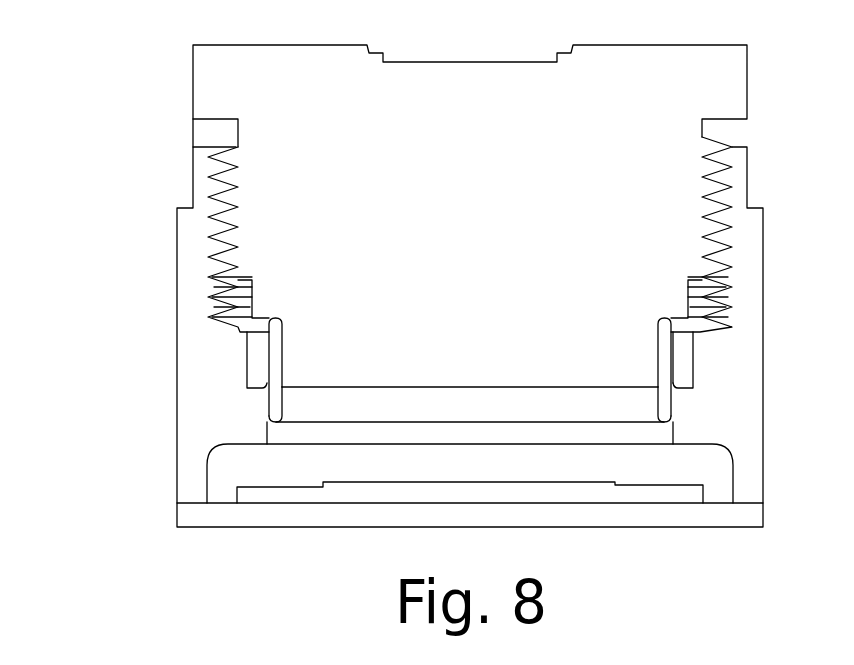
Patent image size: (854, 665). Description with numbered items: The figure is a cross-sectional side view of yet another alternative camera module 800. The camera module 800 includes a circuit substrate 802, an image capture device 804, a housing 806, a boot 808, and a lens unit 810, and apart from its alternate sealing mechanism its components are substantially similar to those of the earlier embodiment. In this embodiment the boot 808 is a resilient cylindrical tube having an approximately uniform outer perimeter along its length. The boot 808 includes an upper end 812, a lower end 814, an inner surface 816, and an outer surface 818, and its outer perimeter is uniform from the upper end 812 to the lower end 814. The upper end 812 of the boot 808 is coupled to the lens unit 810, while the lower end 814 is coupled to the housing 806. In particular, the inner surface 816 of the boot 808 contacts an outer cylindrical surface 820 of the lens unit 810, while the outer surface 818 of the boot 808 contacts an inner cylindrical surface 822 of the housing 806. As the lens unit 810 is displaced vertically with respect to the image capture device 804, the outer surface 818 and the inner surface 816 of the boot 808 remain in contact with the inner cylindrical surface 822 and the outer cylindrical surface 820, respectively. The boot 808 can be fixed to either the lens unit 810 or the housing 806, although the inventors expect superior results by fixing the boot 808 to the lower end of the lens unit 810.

The camera module 800 is at (85, 159).
The circuit substrate 802 is at (760, 514).
The image capture device 804 is at (322, 495).
The housing 806 is at (197, 391).
The boot 808 is at (278, 372).
The lens unit 810 is at (723, 90).
The upper end 812 is at (278, 318).
The lower end 814 is at (279, 421).
The inner surface 816 is at (656, 400).
The outer surface 818 is at (673, 335).
The outer cylindrical surface 820 is at (658, 360).
The inner cylindrical surface 822 is at (672, 428).